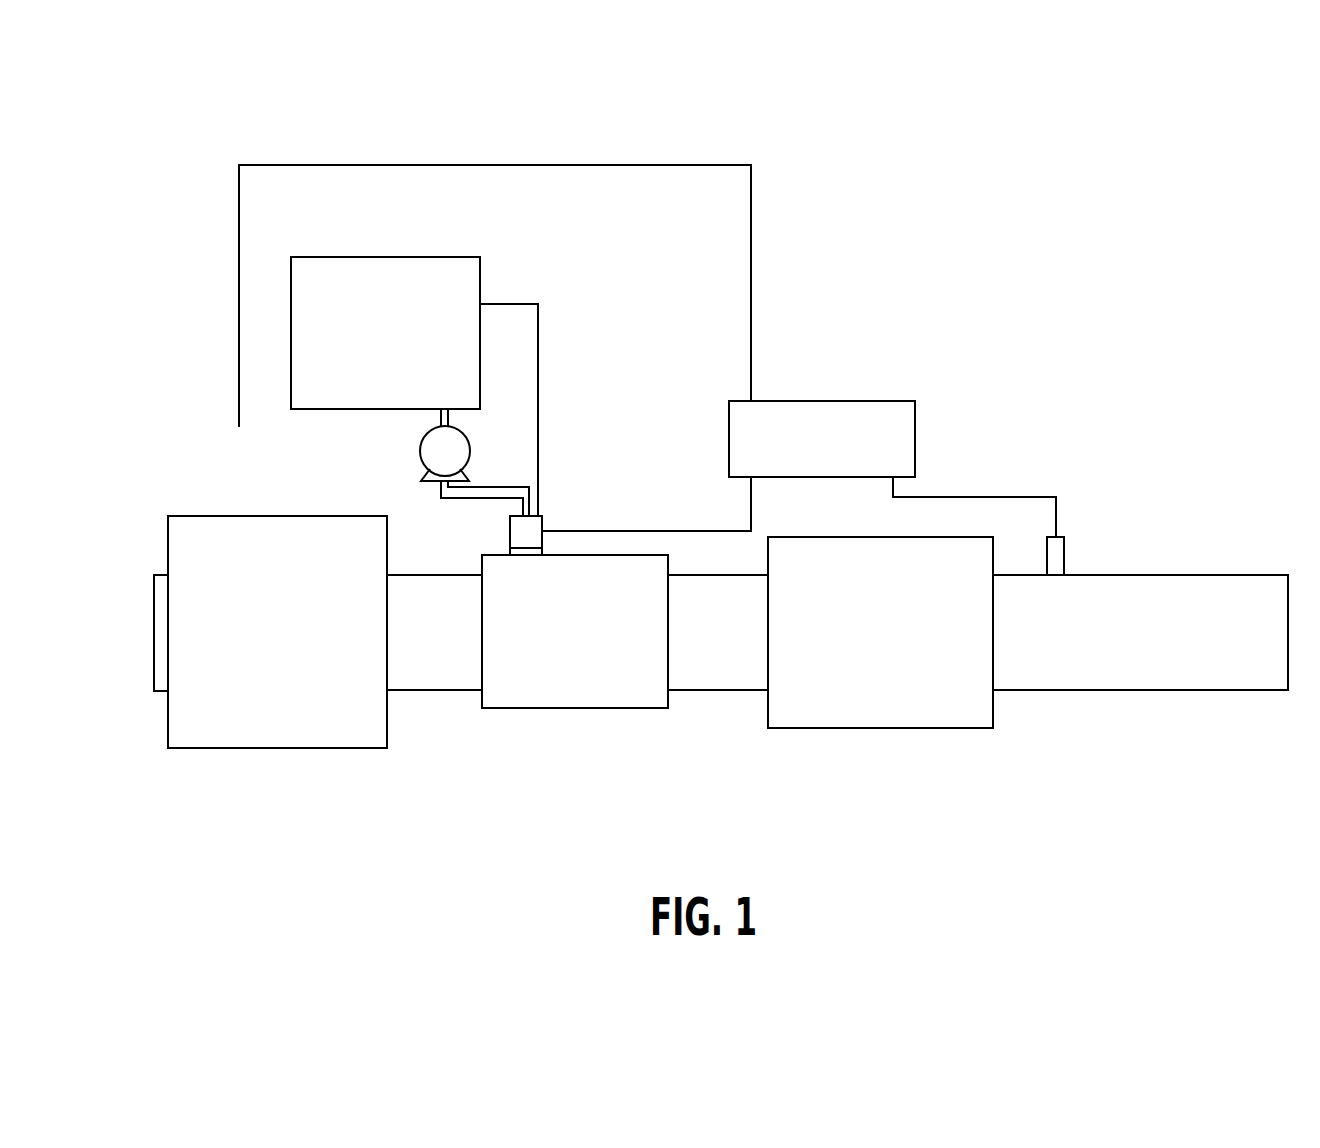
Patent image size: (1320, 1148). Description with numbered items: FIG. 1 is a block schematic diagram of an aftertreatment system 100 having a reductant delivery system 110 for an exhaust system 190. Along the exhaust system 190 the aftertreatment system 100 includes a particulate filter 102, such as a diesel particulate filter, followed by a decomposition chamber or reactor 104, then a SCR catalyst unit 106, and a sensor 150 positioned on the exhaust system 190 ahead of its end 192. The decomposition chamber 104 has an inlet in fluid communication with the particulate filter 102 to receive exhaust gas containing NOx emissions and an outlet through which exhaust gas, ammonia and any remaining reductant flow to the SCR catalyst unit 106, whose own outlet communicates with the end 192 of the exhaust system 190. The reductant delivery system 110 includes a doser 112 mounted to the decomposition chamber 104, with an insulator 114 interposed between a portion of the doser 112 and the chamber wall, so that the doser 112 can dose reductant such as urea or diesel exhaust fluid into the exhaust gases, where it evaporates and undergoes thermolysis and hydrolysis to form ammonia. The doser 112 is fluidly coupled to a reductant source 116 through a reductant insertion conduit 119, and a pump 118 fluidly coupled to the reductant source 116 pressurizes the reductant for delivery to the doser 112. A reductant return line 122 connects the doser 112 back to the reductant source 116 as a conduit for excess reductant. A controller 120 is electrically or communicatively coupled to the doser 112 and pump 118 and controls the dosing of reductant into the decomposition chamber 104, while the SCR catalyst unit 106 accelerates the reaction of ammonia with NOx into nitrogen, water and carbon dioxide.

The aftertreatment system 100 is at (168, 135).
The particulate filter 102 is at (307, 750).
The decomposition chamber 104 is at (657, 553).
The SCR catalyst unit 106 is at (890, 730).
The reductant delivery system 110 is at (635, 455).
The doser 112 is at (544, 525).
The insulator 114 is at (510, 545).
The reductant source 116 is at (391, 256).
The pump 118 is at (420, 450).
The reductant insertion conduit 119 is at (483, 485).
The controller 120 is at (840, 400).
The reductant return line 122 is at (534, 410).
The sensor 150 is at (1078, 550).
The exhaust system 190 is at (472, 782).
The end of the exhaust system 192 is at (1220, 695).